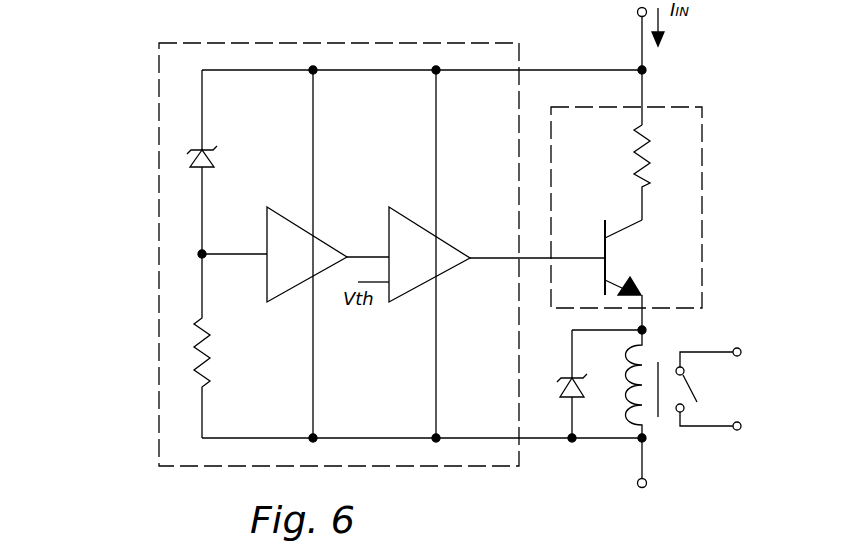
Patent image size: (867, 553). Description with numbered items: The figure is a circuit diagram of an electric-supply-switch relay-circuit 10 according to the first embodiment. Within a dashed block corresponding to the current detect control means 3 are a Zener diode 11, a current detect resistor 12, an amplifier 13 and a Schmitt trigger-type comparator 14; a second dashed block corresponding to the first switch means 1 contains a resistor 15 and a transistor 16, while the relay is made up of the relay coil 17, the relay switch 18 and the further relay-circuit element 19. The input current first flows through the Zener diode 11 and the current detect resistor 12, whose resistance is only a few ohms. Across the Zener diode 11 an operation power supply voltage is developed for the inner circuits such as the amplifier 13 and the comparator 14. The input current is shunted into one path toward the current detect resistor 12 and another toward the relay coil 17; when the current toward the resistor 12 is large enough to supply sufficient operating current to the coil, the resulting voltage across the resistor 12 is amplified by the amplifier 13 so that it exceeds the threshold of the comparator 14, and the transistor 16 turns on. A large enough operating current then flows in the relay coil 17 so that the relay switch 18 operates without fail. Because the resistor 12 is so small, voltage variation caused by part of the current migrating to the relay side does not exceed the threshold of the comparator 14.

The electric-supply-switch relay-circuit 10 is at (122, 63).
The current detect control means 3 is at (522, 60).
The first switch means 1 is at (704, 130).
The Zener diode 11 is at (215, 162).
The current detect resistor 12 is at (210, 340).
The amplifier 13 is at (332, 245).
The Schmitt trigger-type comparator 14 is at (457, 248).
The resistor 15 is at (637, 150).
The transistor 16 is at (610, 258).
The relay coil 17 is at (630, 386).
The relay switch 18 is at (697, 389).
The relay-circuit element 19 is at (563, 388).